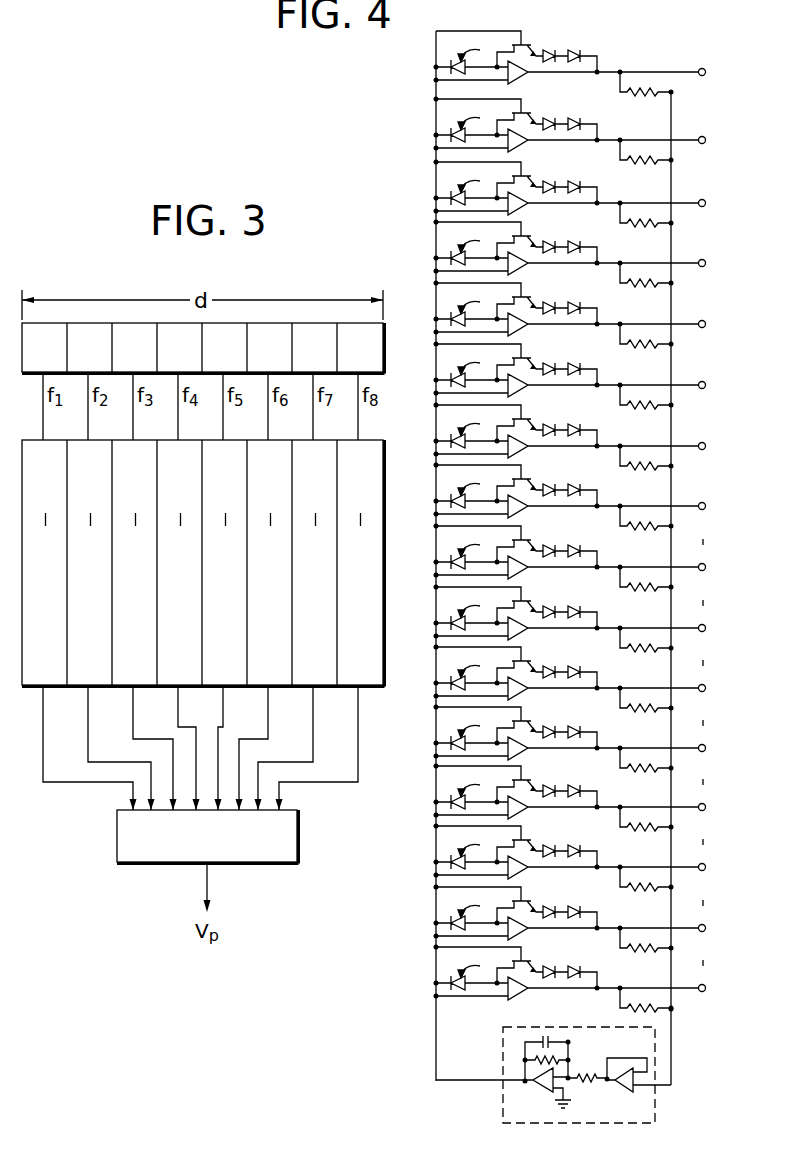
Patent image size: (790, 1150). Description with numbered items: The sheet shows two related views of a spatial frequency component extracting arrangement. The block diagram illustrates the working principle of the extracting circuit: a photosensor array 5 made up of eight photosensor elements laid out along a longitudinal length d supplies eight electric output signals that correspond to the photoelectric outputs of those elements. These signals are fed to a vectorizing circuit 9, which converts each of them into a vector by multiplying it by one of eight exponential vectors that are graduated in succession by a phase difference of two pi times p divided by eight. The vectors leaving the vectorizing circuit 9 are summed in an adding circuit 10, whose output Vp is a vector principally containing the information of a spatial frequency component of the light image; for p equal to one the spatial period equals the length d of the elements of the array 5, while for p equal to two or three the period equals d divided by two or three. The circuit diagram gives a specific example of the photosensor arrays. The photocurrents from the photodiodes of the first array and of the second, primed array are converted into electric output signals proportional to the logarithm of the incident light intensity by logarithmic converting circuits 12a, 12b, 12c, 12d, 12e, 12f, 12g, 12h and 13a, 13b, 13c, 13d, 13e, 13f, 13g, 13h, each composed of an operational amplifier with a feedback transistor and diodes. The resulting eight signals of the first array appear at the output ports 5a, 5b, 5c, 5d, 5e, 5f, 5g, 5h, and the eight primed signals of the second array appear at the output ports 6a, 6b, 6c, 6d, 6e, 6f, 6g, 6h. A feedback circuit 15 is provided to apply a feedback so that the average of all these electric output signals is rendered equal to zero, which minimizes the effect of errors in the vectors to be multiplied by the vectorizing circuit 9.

In FIG. 3, the photosensor array 5 is at (385, 350).
In FIG. 3, the vectorizing circuit 9 is at (385, 558).
In FIG. 3, the adding circuit 10 is at (299, 832).
In FIG. 4, the logarithmic converting circuit 12a is at (547, 40).
In FIG. 4, the logarithmic converting circuit 12b is at (566, 125).
In FIG. 4, the logarithmic converting circuit 12c is at (566, 188).
In FIG. 4, the logarithmic converting circuit 12d is at (566, 248).
In FIG. 4, the logarithmic converting circuit 12e is at (566, 309).
In FIG. 4, the logarithmic converting circuit 12f is at (566, 370).
In FIG. 4, the logarithmic converting circuit 12g is at (566, 431).
In FIG. 4, the logarithmic converting circuit 12h is at (566, 491).
In FIG. 4, the logarithmic converting circuit 13a is at (566, 552).
In FIG. 4, the logarithmic converting circuit 13b is at (566, 613).
In FIG. 4, the logarithmic converting circuit 13c is at (566, 673).
In FIG. 4, the logarithmic converting circuit 13d is at (566, 733).
In FIG. 4, the logarithmic converting circuit 13e is at (566, 792).
In FIG. 4, the logarithmic converting circuit 13f is at (566, 852).
In FIG. 4, the logarithmic converting circuit 13g is at (566, 913).
In FIG. 4, the logarithmic converting circuit 13h is at (566, 973).
In FIG. 4, the output port 5a is at (714, 64).
In FIG. 4, the output port 5b is at (714, 132).
In FIG. 4, the output port 5c is at (713, 195).
In FIG. 4, the output port 5d is at (714, 255).
In FIG. 4, the output port 5e is at (714, 316).
In FIG. 4, the output port 5f is at (711, 377).
In FIG. 4, the output port 5g is at (714, 438).
In FIG. 4, the output port 5h is at (714, 498).
In FIG. 4, the output port 6a is at (714, 559).
In FIG. 4, the output port 6b is at (714, 620).
In FIG. 4, the output port 6c is at (713, 680).
In FIG. 4, the output port 6d is at (714, 740).
In FIG. 4, the output port 6e is at (714, 799).
In FIG. 4, the output port 6f is at (711, 859).
In FIG. 4, the output port 6g is at (714, 920).
In FIG. 4, the output port 6h is at (714, 980).
In FIG. 4, the feedback circuit 15 is at (655, 1100).